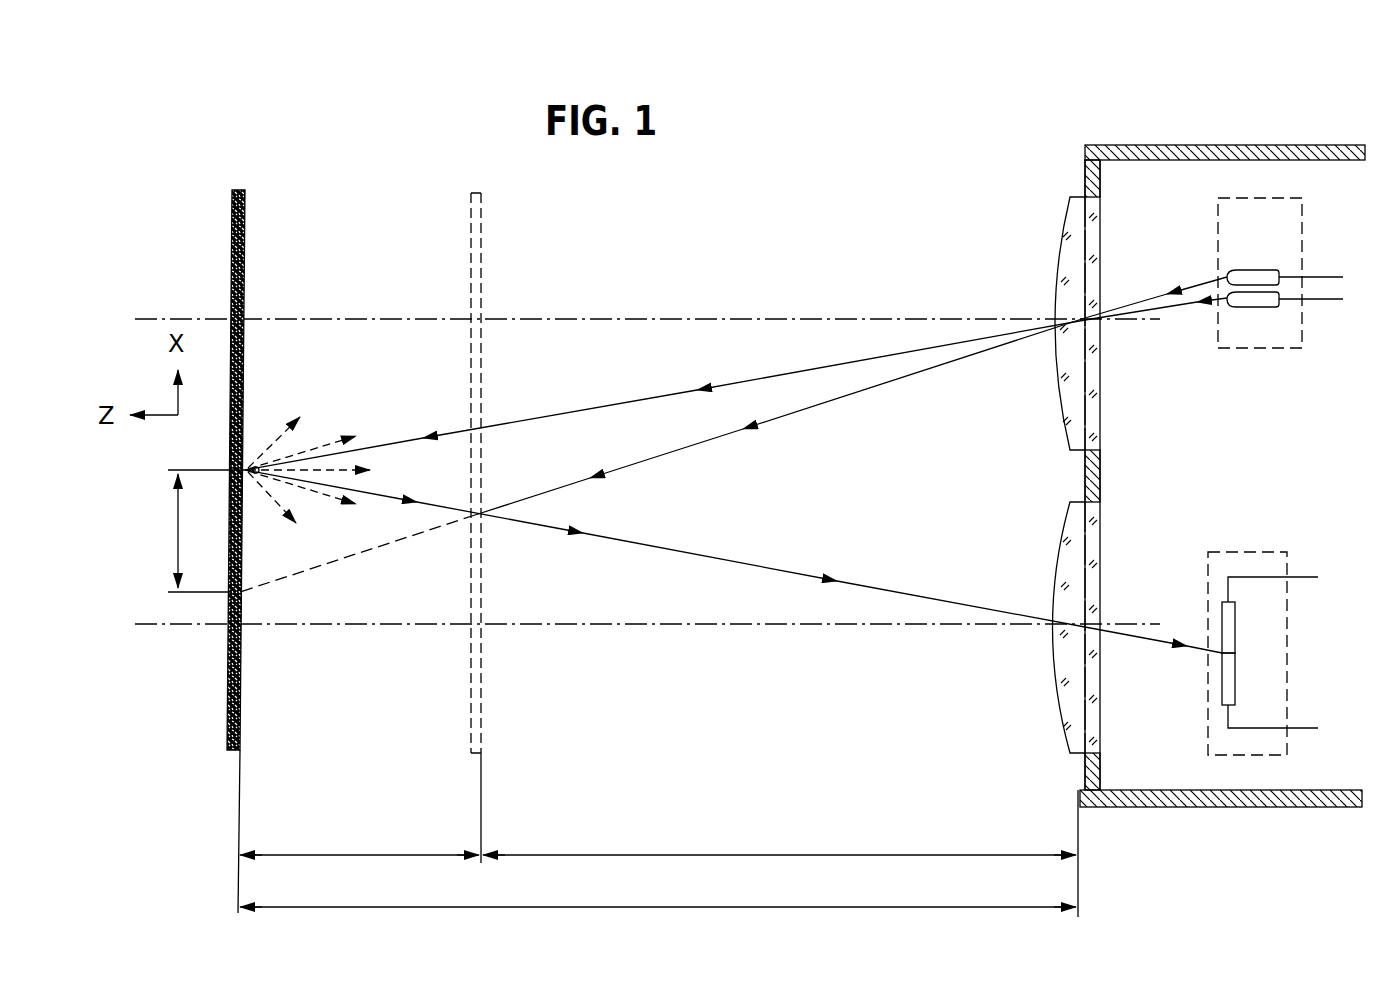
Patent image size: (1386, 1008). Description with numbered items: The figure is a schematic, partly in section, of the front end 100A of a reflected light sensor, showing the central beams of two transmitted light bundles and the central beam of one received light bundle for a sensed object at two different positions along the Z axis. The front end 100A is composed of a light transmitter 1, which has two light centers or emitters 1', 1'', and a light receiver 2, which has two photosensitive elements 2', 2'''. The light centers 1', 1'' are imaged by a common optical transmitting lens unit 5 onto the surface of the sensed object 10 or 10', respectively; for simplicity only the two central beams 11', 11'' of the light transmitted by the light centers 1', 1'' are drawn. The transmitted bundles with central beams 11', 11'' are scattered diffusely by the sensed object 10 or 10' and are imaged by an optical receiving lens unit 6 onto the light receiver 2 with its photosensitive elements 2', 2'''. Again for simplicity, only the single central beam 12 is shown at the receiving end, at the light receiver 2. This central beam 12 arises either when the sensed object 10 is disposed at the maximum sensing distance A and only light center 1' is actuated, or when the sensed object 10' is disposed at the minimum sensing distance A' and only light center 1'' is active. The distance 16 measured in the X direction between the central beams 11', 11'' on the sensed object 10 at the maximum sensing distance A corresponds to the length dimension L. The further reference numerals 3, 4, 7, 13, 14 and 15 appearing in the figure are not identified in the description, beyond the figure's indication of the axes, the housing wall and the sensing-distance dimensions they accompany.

The light transmitter 1 is at (1280, 305).
The light center 1' is at (1285, 315).
The light center 1'' is at (1285, 257).
The light receiver 2 is at (1263, 628).
The photosensitive element 2' is at (1251, 679).
The photosensitive element 2''' is at (1257, 627).
The optical axis of emitting lens 3 is at (705, 320).
The optical axis of receiving lens 4 is at (705, 625).
The optical transmitting lens unit 5 is at (1096, 232).
The optical receiving lens unit 6 is at (1096, 548).
The lens holder wall 7 is at (1084, 158).
The sensed object 10 is at (273, 551).
The sensed object 10' is at (516, 528).
The central beam 11' is at (736, 384).
The central beam 11'' is at (733, 434).
The central beam 12 is at (708, 557).
The minimum sensing distance A' 13 is at (600, 853).
The maximum sensing distance A 14 is at (870, 907).
The sensing range B 15 is at (358, 862).
The distance 16 is at (178, 503).
The front end 100A is at (1186, 135).